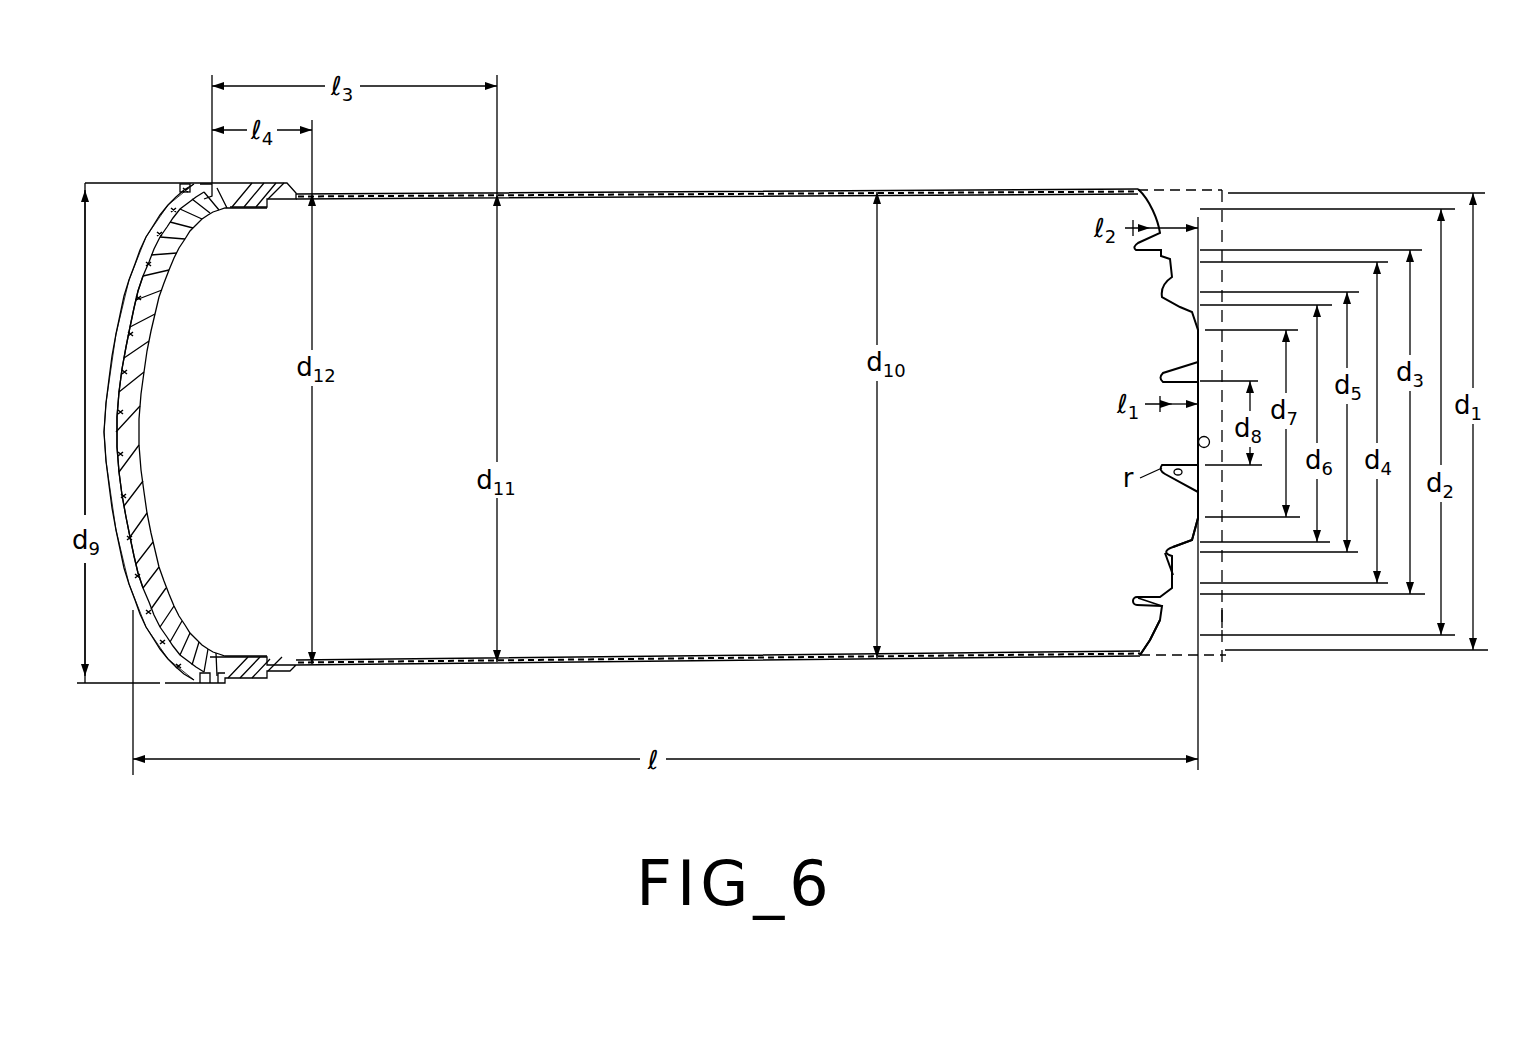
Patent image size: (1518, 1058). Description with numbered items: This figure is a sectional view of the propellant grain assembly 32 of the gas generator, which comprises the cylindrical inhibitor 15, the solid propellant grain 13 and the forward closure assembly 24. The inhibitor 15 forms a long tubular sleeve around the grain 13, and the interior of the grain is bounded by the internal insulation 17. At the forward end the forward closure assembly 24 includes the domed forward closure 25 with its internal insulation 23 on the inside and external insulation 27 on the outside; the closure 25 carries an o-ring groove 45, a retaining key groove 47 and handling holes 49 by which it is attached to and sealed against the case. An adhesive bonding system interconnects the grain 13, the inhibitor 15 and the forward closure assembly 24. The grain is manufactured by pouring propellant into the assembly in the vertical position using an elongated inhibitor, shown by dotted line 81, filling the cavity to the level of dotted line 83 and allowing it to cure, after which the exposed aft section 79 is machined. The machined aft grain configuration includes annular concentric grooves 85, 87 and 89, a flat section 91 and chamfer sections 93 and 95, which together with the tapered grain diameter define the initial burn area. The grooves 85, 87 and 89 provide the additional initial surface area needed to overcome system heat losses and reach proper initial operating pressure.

The propellant grain 13 is at (433, 220).
The inhibitor 15 is at (385, 193).
The internal insulation 17 is at (708, 384).
The internal insulation 23 is at (132, 490).
The forward closure assembly 24 is at (103, 350).
The forward closure 25 is at (117, 430).
The external insulation 27 is at (140, 255).
The propellant grain assembly 32 is at (127, 700).
The o-ring groove 45 is at (220, 190).
The retaining key groove 47 is at (208, 185).
The handling holes 49 is at (185, 184).
The exposed aft section 79 is at (1246, 178).
The dotted line 81 is at (1190, 182).
The dotted line 83 is at (1224, 618).
The annular concentric groove 85 is at (1182, 484).
The annular concentric groove 87 is at (1162, 557).
The annular concentric groove 89 is at (1142, 602).
The flat section 91 is at (1198, 441).
The chamfer section 93 is at (1200, 535).
The chamfer section 95 is at (1147, 656).